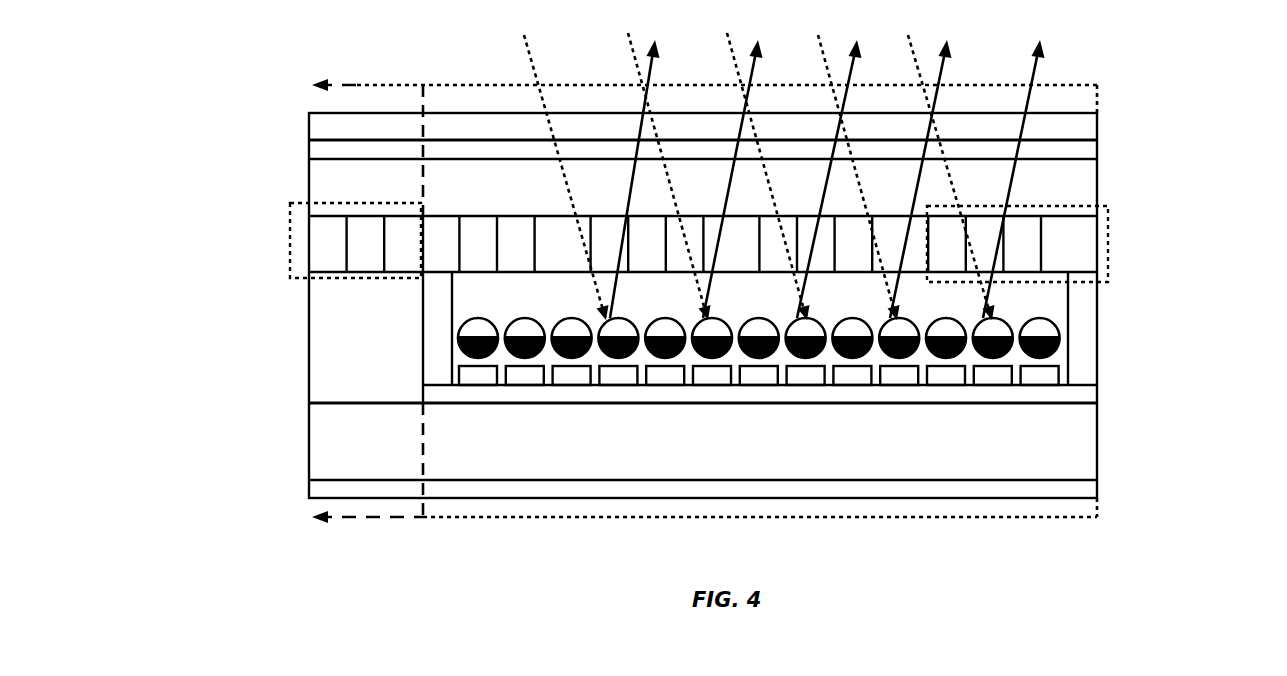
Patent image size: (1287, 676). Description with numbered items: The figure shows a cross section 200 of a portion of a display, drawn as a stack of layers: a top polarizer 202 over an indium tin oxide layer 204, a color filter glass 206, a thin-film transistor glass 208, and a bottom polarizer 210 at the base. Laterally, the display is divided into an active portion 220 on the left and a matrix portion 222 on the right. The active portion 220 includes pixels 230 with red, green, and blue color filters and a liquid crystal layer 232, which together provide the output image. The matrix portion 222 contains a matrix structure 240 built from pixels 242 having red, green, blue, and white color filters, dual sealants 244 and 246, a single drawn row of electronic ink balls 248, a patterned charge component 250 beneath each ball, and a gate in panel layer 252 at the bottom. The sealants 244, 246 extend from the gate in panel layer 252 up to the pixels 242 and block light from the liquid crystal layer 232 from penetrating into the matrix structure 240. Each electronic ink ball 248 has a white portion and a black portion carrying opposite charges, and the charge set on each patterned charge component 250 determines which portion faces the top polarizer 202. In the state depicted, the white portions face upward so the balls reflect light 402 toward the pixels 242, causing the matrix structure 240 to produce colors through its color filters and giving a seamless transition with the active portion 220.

The cross section 200 is at (1000, 572).
The top polarizer 202 is at (1073, 123).
The indium tin oxide layer 204 is at (1073, 150).
The color filter glass 206 is at (1060, 198).
The thin-film transistor glass 208 is at (1068, 447).
The bottom polarizer 210 is at (1073, 493).
The active portion 220 is at (357, 85).
The matrix portion 222 is at (1060, 84).
The pixels 230 is at (290, 262).
The liquid crystal layer 232 is at (348, 375).
The matrix structure 240 is at (412, 350).
The pixels 242 is at (1110, 260).
The sealant 244 is at (440, 318).
The sealant 246 is at (1077, 302).
The electronic ink balls 248 is at (1075, 337).
The patterned charge component 250 is at (1073, 377).
The gate in panel layer 252 is at (1075, 398).
The light 402 is at (652, 68).